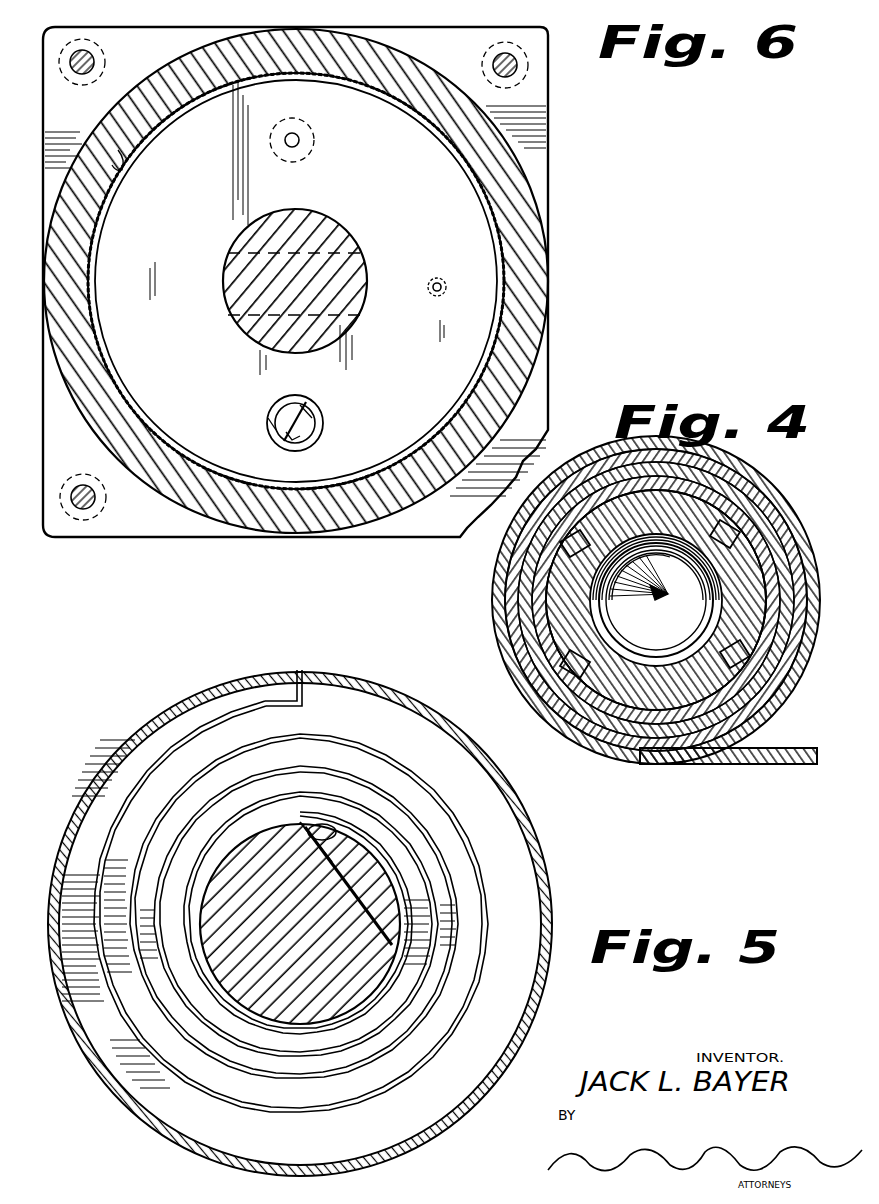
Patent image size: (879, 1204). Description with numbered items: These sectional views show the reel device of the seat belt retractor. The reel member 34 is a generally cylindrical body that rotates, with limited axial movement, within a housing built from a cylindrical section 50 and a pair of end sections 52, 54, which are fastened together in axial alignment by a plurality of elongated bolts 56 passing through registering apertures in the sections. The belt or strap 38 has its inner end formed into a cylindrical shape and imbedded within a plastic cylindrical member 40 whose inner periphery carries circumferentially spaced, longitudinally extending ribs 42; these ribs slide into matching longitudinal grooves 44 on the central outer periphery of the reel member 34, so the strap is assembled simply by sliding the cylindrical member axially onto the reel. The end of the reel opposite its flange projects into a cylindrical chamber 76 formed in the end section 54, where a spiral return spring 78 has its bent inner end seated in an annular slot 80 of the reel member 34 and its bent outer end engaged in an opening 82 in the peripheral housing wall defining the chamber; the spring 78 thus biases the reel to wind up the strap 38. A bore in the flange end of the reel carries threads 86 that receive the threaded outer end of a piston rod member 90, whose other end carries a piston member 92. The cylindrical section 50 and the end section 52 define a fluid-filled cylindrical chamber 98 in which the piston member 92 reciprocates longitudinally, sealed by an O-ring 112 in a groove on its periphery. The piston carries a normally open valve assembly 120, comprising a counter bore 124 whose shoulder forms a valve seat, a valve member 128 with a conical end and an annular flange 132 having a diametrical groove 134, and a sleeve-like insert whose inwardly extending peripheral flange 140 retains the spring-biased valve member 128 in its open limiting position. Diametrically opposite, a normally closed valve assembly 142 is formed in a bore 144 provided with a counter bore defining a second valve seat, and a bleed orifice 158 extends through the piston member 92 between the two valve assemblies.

In FIG. 4, the reel member 34 is at (690, 516).
In FIG. 5, the reel member 34 is at (288, 858).
In FIG. 4, the belt or strap 38 is at (742, 765).
In FIG. 4, the plastic cylindrical member 40 is at (548, 600).
In FIG. 4, the ribs 42 is at (565, 652).
In FIG. 4, the grooves 44 is at (560, 548).
In FIG. 6, the cylindrical section 50 is at (534, 172).
In FIG. 6, the end section 52 is at (564, 100).
In FIG. 5, the end section 54 is at (382, 680).
In FIG. 6, the elongated bolts 56 is at (94, 56).
In FIG. 5, the cylindrical chamber 76 is at (496, 790).
In FIG. 5, the spiral return spring 78 is at (336, 744).
In FIG. 5, the annular slot 80 is at (346, 874).
In FIG. 5, the opening 82 is at (296, 676).
In FIG. 4, the threads 86 is at (656, 597).
In FIG. 6, the piston rod member 90 is at (356, 268).
In FIG. 6, the piston member 92 is at (484, 322).
In FIG. 6, the cylindrical chamber 98 is at (118, 152).
In FIG. 6, the O-ring 112 is at (508, 250).
In FIG. 6, the normally open valve assembly 120 is at (318, 416).
In FIG. 6, the counter bore 124 is at (298, 452).
In FIG. 6, the valve member 128 is at (322, 425).
In FIG. 6, the annular flange 132 is at (316, 437).
In FIG. 6, the groove 134 is at (268, 425).
In FIG. 6, the peripheral flange 140 is at (290, 398).
In FIG. 6, the normally closed valve assembly 142 is at (284, 144).
In FIG. 6, the bore 144 is at (300, 148).
In FIG. 6, the bleed orifice 158 is at (430, 287).